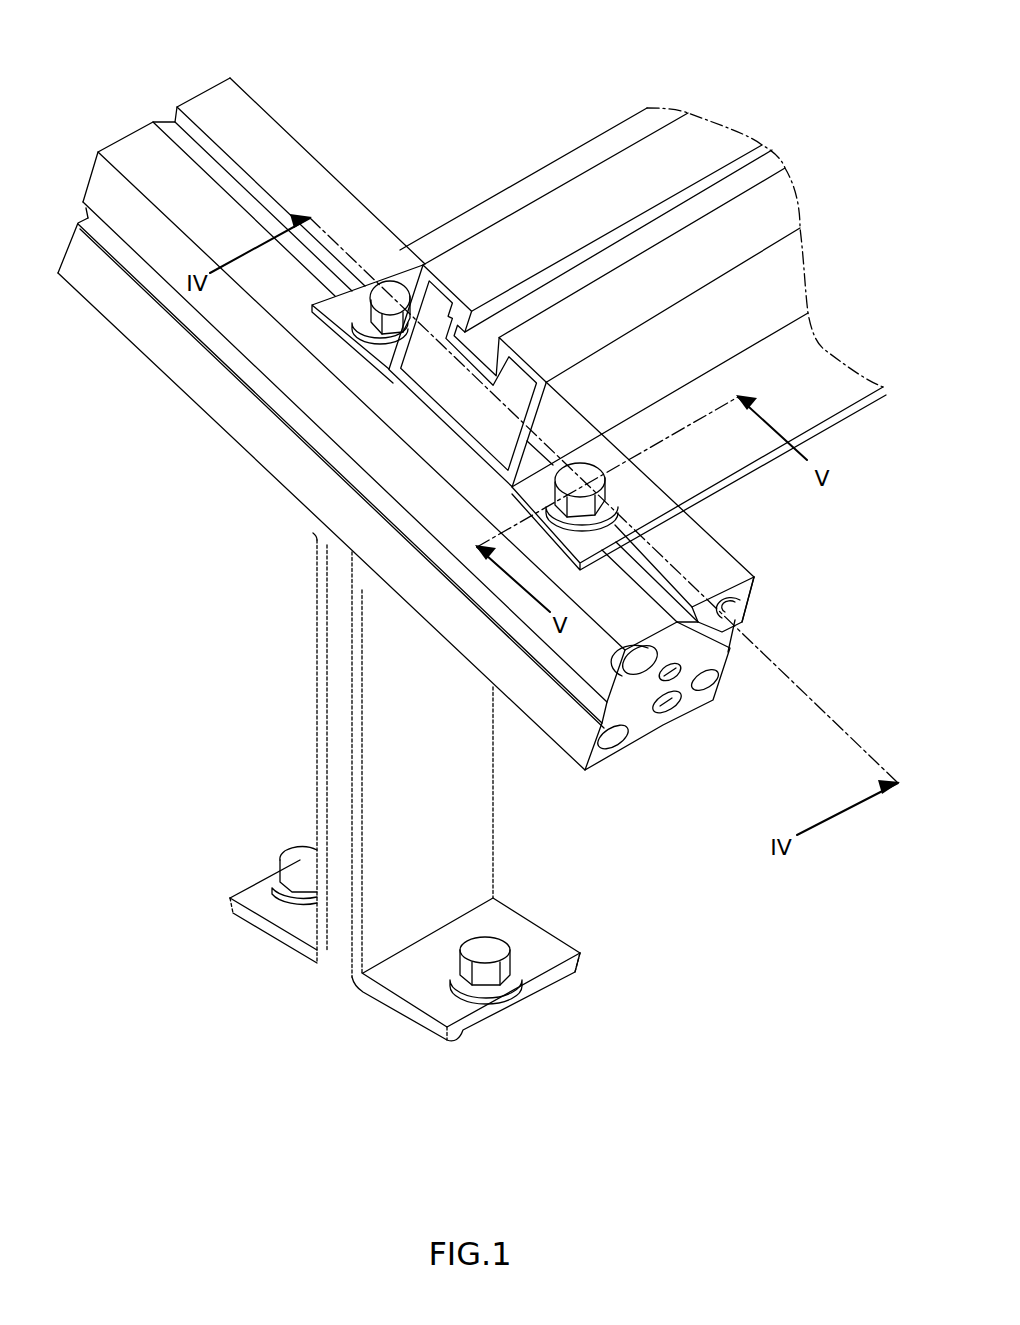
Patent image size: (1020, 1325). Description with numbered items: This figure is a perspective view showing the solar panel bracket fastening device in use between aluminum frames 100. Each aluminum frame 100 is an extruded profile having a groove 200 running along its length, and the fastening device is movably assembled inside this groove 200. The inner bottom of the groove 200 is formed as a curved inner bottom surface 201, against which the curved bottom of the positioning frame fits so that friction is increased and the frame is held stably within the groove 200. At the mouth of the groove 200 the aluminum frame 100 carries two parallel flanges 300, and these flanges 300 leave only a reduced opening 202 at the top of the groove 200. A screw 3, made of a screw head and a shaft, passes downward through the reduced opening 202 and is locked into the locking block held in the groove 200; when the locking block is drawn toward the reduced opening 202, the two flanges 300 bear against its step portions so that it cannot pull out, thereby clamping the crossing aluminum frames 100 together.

The aluminum frame 100 is at (544, 158).
The screw 3 is at (395, 300).
The groove 200 is at (705, 648).
The curved inner bottom surface 201 is at (660, 646).
The reduced opening 202 is at (690, 574).
The flanges 300 is at (735, 620).